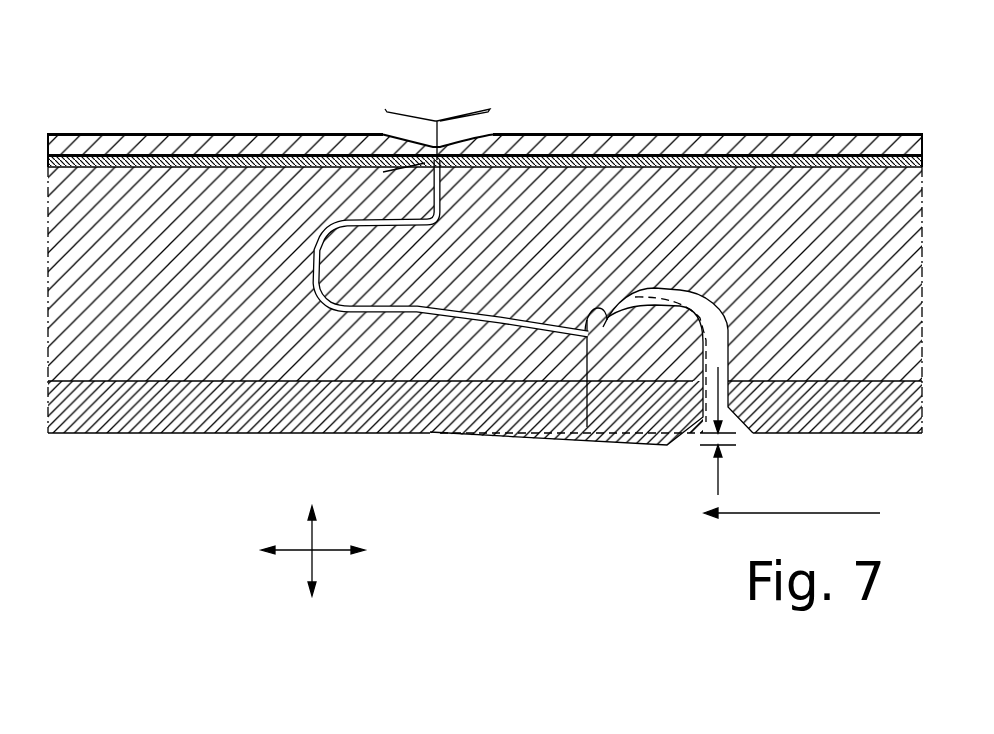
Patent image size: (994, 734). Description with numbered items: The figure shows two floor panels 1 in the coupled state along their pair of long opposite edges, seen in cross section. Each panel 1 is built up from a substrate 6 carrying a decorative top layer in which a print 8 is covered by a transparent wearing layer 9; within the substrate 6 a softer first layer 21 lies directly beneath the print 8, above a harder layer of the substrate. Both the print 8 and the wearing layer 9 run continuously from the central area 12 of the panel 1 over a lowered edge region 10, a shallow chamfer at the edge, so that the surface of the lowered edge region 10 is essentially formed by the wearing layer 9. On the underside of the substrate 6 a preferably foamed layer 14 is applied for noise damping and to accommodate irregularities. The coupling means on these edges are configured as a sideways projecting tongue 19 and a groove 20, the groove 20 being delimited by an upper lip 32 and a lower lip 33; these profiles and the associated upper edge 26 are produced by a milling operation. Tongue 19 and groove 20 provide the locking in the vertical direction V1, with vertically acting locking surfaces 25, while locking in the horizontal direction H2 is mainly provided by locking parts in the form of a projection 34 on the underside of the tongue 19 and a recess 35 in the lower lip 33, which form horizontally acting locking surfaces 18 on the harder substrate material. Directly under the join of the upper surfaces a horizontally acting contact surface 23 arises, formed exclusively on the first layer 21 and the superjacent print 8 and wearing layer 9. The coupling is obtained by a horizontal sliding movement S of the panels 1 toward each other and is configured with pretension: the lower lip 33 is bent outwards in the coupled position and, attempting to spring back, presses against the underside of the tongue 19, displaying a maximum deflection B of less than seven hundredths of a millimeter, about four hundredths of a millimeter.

The panel 1 is at (227, 183).
The substrate 6 is at (143, 355).
The print 8 is at (312, 162).
The wearing layer 9 is at (600, 135).
The lowered edge region 10 is at (462, 112).
The central area 12 is at (808, 134).
The layer 14 is at (290, 424).
The horizontally acting locking surfaces 18 is at (557, 437).
The tongue 19 is at (450, 267).
The groove 20 is at (375, 310).
The first layer 21 is at (90, 157).
The horizontally acting contact surface 23 is at (383, 172).
The vertically acting locking surfaces 25 is at (397, 202).
The upper edge 26 is at (445, 130).
The upper lip 32 is at (377, 227).
The lower lip 33 is at (485, 360).
The projection 34 is at (542, 313).
The recess 35 is at (503, 323).
The maximum deflection B is at (720, 492).
The horizontal sliding movement S is at (792, 526).
The vertical direction V1 is at (314, 545).
The horizontal direction H2 is at (300, 552).